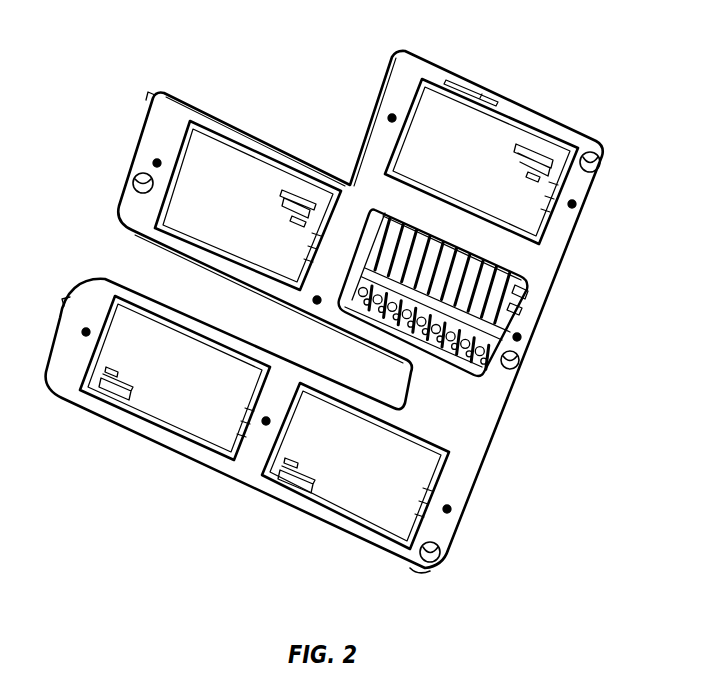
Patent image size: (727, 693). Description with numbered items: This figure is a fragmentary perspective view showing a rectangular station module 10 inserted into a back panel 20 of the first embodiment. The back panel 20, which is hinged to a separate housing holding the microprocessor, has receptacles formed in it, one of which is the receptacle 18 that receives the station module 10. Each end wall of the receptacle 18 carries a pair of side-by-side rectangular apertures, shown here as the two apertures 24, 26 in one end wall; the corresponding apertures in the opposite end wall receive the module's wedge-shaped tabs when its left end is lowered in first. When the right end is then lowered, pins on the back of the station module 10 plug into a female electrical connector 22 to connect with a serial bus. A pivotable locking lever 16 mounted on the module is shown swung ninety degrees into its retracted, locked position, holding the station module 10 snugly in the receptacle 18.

The station module 10 is at (346, 312).
The locking lever 16 is at (526, 291).
The receptacle 18 is at (515, 153).
The back panel 20 is at (324, 312).
The female electrical connector 22 is at (518, 150).
The aperture 24 is at (562, 194).
The aperture 26 is at (550, 210).